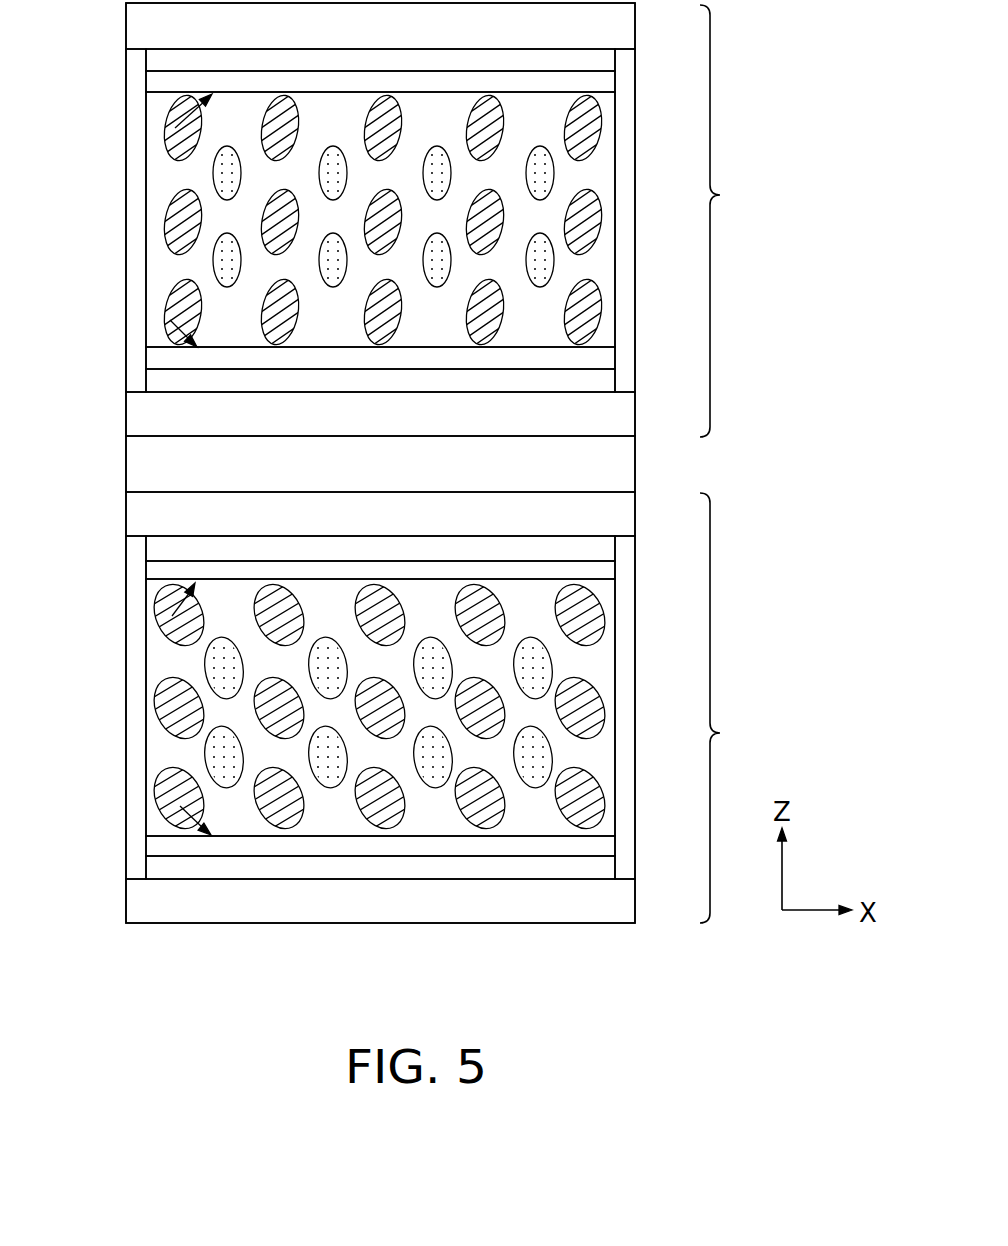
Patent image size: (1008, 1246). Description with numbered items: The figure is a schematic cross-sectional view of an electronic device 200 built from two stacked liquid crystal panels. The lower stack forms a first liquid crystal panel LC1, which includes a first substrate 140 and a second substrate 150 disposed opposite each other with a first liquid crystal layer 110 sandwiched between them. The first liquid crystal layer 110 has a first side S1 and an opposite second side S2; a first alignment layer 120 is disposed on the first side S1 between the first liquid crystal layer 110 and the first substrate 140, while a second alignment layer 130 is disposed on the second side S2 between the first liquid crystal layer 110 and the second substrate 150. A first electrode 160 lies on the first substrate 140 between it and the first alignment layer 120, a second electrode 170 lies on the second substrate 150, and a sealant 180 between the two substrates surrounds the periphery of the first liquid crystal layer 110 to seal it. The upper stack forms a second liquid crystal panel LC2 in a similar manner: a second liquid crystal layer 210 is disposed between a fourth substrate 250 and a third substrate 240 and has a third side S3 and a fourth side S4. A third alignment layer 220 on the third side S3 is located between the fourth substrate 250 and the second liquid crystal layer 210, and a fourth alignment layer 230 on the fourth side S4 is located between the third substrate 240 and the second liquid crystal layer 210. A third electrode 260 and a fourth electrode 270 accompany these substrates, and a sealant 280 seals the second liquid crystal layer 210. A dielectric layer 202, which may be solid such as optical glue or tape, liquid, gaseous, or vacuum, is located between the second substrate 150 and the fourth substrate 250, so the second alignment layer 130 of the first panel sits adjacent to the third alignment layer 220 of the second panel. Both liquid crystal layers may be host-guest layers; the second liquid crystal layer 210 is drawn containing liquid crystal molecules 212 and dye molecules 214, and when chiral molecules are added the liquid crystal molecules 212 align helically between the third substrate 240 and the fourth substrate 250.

The electronic device 200 is at (826, 1007).
The third substrate 240 is at (138, 24).
The fourth electrode 270 is at (152, 60).
The fourth alignment layer 230 is at (150, 80).
The sealant 280 is at (137, 167).
The second liquid crystal layer 210 is at (162, 252).
The liquid crystal molecules 212 is at (587, 232).
The dye molecules 214 is at (543, 267).
The third alignment layer 220 is at (160, 357).
The third electrode 260 is at (158, 384).
The fourth substrate 250 is at (137, 406).
The dielectric layer 202 is at (620, 460).
The second substrate 150 is at (138, 520).
The second electrode 170 is at (160, 543).
The second alignment layer 130 is at (160, 571).
The sealant 180 is at (136, 694).
The first liquid crystal layer 110 is at (160, 740).
The first alignment layer 120 is at (158, 847).
The first electrode 160 is at (157, 868).
The first substrate 140 is at (138, 904).
The first side S1 is at (185, 810).
The second side S2 is at (178, 614).
The third side S3 is at (180, 326).
The fourth side S4 is at (175, 128).
The first liquid crystal panel LC1 is at (738, 708).
The second liquid crystal panel LC2 is at (740, 221).